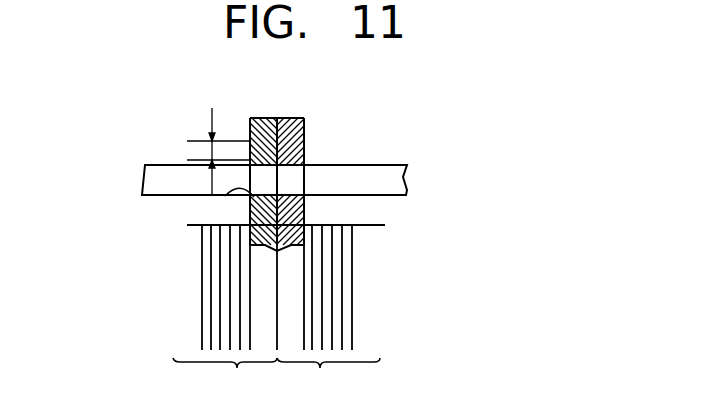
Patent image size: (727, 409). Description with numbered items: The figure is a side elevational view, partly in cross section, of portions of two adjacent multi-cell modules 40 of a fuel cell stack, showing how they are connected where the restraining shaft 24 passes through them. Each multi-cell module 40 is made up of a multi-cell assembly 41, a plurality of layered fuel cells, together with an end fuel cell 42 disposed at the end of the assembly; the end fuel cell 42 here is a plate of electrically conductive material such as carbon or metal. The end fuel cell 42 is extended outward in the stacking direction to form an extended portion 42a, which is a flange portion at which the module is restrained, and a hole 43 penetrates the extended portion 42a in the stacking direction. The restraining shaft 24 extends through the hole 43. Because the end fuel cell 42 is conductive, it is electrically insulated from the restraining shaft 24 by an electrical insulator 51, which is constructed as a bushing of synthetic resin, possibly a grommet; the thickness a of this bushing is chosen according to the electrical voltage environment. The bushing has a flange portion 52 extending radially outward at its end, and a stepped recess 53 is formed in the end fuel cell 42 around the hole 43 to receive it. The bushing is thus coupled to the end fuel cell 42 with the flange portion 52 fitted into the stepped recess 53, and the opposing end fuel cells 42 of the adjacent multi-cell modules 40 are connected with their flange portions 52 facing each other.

The restraining shaft 24 is at (193, 177).
The electrical insulator 51 is at (306, 158).
The end fuel cell 42 is at (306, 139).
The extended portion 42a is at (292, 118).
The stepped recess 53 is at (250, 151).
The flange portion 52 is at (264, 243).
The hole 43 is at (225, 196).
The multi-cell assembly 41 is at (228, 302).
The multi-cell module 40 is at (279, 313).
The thickness of the bushing a is at (210, 158).